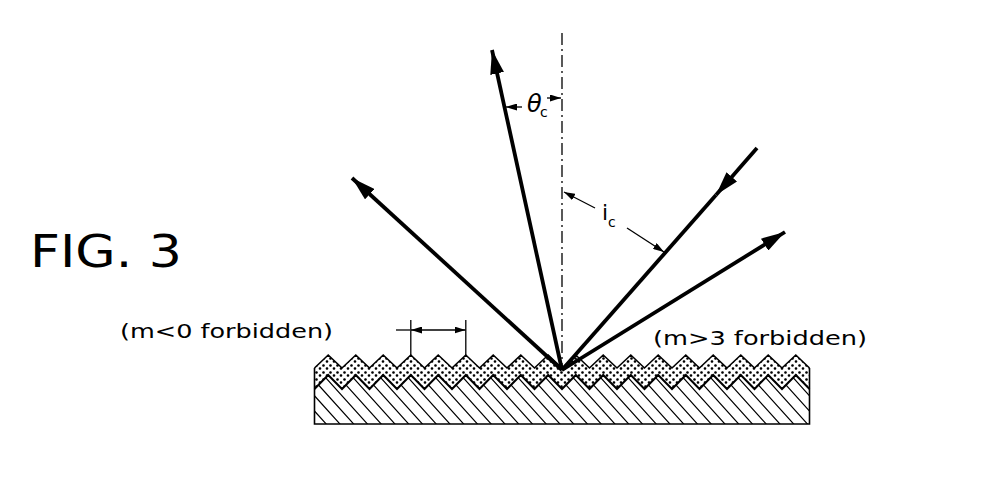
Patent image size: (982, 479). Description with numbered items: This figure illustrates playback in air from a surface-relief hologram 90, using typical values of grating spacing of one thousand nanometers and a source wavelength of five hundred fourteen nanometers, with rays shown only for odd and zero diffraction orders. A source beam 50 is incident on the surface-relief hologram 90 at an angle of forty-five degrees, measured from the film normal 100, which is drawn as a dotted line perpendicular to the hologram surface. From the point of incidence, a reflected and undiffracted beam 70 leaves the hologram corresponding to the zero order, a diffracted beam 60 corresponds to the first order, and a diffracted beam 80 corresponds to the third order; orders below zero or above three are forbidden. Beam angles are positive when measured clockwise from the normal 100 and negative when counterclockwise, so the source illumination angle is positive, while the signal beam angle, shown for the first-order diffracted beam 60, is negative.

The beam 50 is at (737, 163).
The diffracted beam 60 is at (500, 100).
The reflected beam 70 is at (383, 202).
The diffracted beam 80 is at (737, 263).
The surface-relief hologram 90 is at (813, 352).
The film normal 100 is at (563, 62).